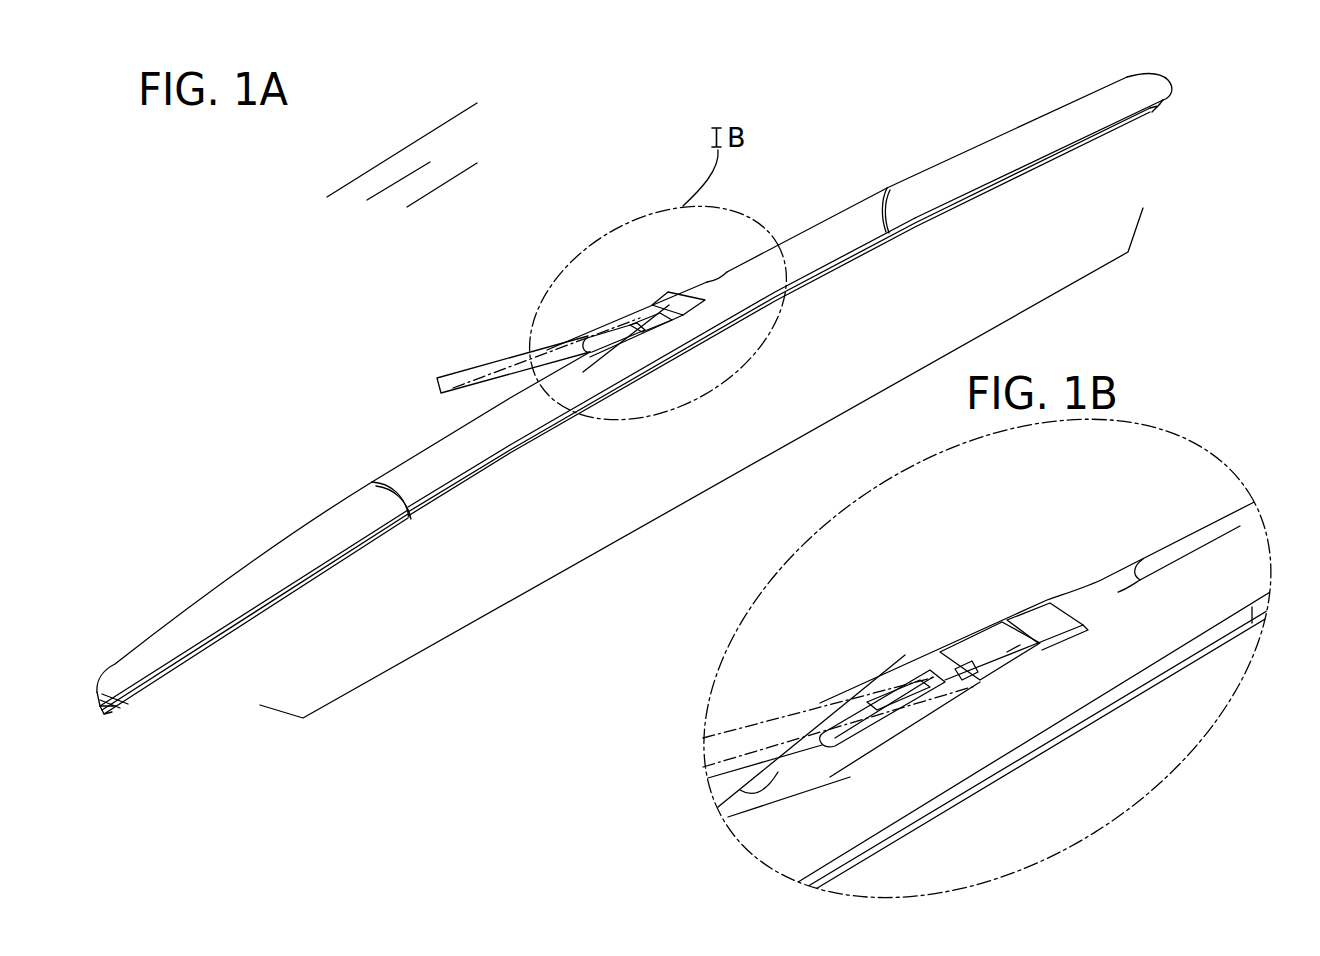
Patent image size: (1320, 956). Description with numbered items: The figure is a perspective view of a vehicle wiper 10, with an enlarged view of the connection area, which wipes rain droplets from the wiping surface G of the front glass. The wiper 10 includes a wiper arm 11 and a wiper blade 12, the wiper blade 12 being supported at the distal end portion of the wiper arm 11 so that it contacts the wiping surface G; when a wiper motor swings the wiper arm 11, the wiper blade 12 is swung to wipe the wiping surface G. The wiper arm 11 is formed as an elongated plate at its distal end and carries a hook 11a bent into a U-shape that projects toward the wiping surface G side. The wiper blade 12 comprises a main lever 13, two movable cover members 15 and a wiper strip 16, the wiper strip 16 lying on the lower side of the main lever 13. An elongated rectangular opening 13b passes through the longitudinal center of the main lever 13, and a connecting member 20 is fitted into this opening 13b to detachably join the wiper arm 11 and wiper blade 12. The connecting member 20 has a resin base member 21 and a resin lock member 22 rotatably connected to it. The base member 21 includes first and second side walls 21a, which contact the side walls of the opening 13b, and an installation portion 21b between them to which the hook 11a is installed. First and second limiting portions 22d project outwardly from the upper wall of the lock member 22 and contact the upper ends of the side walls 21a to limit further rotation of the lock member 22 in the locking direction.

In FIG. 1A, the wiping surface G is at (415, 128).
In FIG. 1A, the wiper 10 is at (462, 283).
In FIG. 1A, the wiper arm 11 is at (460, 373).
In FIG. 1B, the wiper arm 11 is at (758, 722).
In FIG. 1B, the hook 11a is at (968, 688).
In FIG. 1A, the wiper blade 12 is at (784, 240).
In FIG. 1A, the main lever 13 is at (848, 240).
In FIG. 1B, the main lever 13 is at (1167, 557).
In FIG. 1A, the opening 13b is at (668, 310).
In FIG. 1B, the opening 13b is at (942, 692).
In FIG. 1A, the movable cover member 15 is at (967, 177).
In FIG. 1A, the wiper strip 16 is at (108, 712).
In FIG. 1A, the connecting member 20 is at (660, 312).
In FIG. 1B, the connecting member 20 is at (1022, 566).
In FIG. 1B, the base member 21 is at (914, 664).
In FIG. 1B, the first and second side walls 21a is at (981, 681).
In FIG. 1B, the installation portion 21b is at (920, 697).
In FIG. 1B, the lock member 22 is at (1023, 622).
In FIG. 1B, the first and second limiting portions 22d is at (1007, 652).